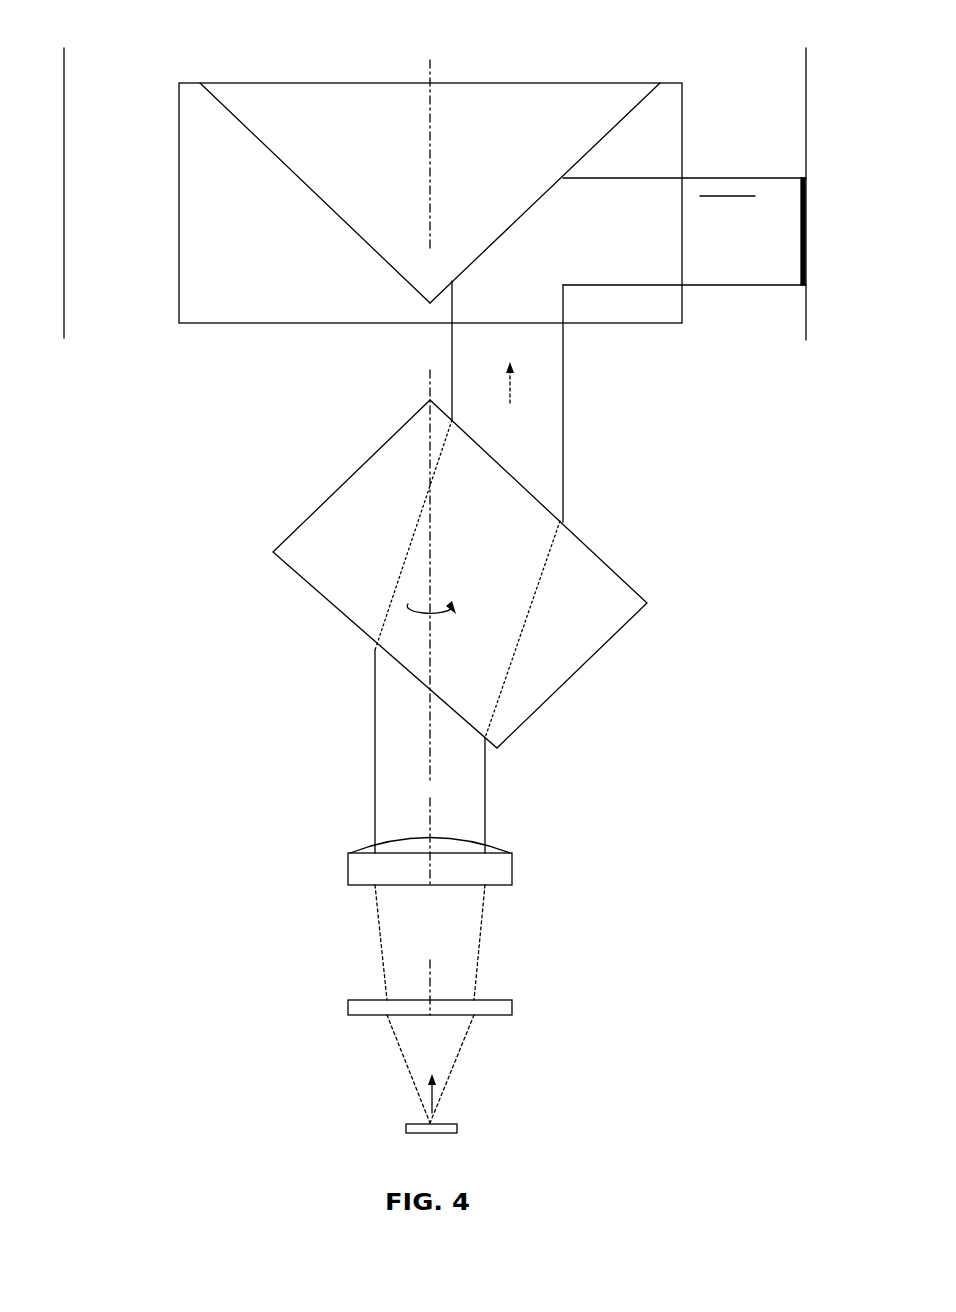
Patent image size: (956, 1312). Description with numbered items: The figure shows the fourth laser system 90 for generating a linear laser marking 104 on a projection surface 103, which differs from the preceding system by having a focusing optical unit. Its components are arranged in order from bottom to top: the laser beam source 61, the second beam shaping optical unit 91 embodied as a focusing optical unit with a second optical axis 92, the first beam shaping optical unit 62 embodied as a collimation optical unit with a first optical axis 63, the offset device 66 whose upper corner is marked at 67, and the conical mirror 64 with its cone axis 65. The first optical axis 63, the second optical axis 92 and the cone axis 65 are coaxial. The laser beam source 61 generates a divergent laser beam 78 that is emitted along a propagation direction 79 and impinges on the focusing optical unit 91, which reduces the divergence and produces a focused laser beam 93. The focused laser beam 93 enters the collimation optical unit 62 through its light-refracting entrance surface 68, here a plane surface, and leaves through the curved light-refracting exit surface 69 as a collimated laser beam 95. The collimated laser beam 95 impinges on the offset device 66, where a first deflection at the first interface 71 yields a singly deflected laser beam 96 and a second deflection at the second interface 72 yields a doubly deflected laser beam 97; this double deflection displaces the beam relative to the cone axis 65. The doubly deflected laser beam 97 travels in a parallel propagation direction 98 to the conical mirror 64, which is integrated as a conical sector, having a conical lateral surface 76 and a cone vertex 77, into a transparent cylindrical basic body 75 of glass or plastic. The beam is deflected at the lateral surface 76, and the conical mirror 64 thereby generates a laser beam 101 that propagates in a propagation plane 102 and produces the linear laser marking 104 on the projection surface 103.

The laser beam source 61 is at (372, 1126).
The first beam shaping optical unit 62 is at (280, 864).
The first optical axis 63 is at (430, 866).
The conical mirror 64 is at (363, 98).
The cone axis 65 is at (432, 116).
The offset device 66 is at (248, 504).
The prism top vertex 67 is at (427, 390).
The entrance surface 68 is at (355, 887).
The exit surface 69 is at (350, 850).
The first interface 71 is at (297, 578).
The second interface 72 is at (620, 562).
The transparent cylindrical basic body 75 is at (240, 82).
The conical lateral surface 76 is at (240, 135).
The cone vertex 77 is at (420, 280).
The divergent laser beam 78 is at (402, 1056).
The propagation direction 79 is at (434, 1098).
The fourth laser system 90 is at (716, 1034).
The second beam shaping optical unit 91 is at (280, 1002).
The second optical axis 92 is at (430, 986).
The focused laser beam 93 is at (482, 934).
The collimated laser beam 95 is at (374, 718).
The singly deflected laser beam 96 is at (528, 608).
The doubly deflected laser beam 97 is at (565, 456).
The parallel propagation direction 98 is at (513, 386).
The laser beam 101 is at (740, 287).
The propagation plane 102 is at (722, 195).
The projection surface 103 is at (78, 70).
The linear laser marking 104 is at (802, 234).